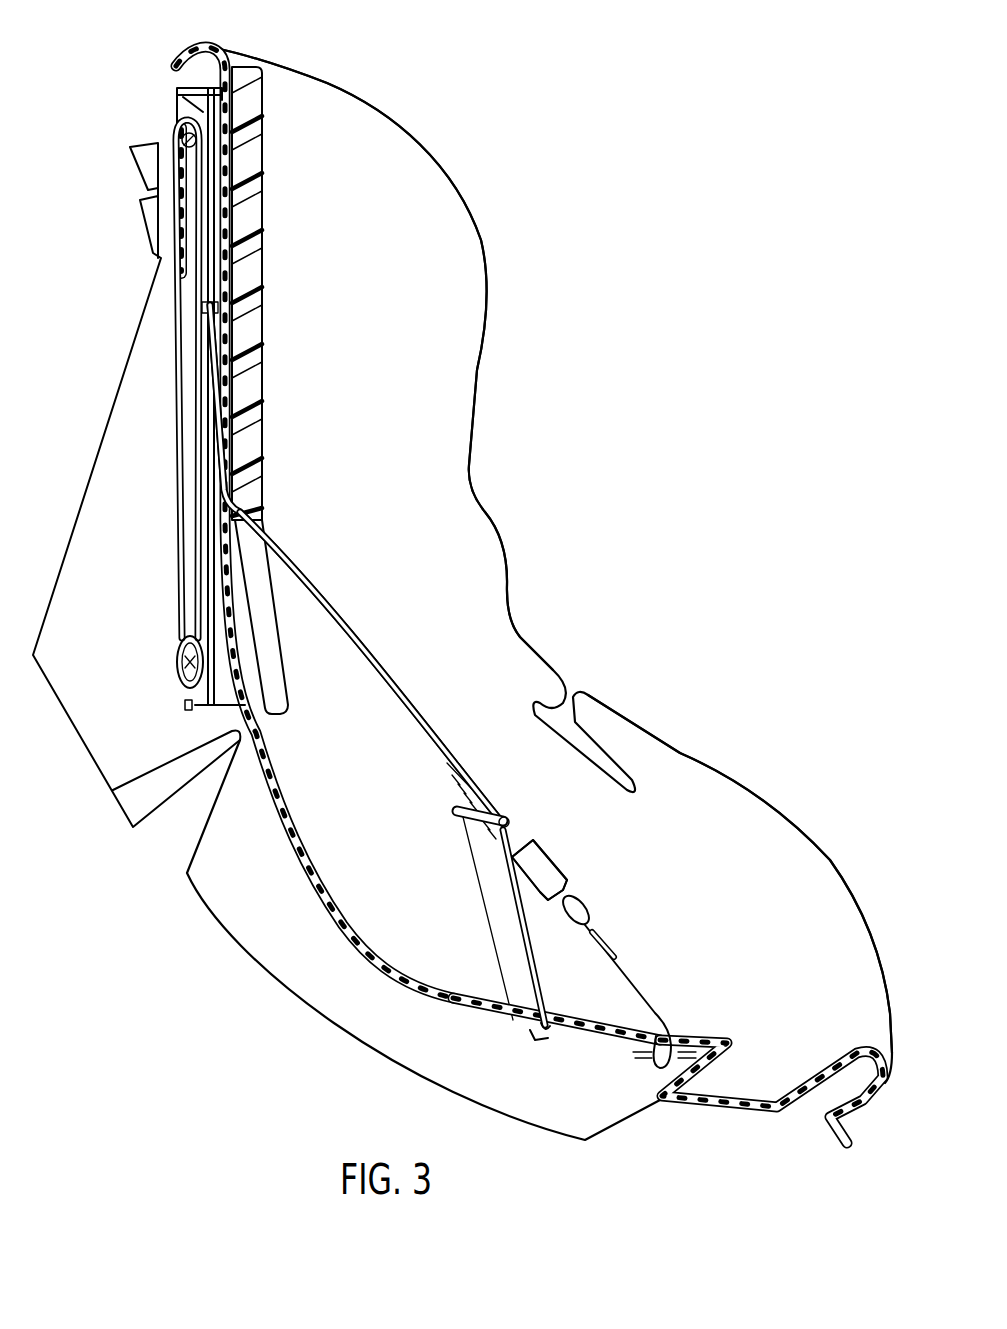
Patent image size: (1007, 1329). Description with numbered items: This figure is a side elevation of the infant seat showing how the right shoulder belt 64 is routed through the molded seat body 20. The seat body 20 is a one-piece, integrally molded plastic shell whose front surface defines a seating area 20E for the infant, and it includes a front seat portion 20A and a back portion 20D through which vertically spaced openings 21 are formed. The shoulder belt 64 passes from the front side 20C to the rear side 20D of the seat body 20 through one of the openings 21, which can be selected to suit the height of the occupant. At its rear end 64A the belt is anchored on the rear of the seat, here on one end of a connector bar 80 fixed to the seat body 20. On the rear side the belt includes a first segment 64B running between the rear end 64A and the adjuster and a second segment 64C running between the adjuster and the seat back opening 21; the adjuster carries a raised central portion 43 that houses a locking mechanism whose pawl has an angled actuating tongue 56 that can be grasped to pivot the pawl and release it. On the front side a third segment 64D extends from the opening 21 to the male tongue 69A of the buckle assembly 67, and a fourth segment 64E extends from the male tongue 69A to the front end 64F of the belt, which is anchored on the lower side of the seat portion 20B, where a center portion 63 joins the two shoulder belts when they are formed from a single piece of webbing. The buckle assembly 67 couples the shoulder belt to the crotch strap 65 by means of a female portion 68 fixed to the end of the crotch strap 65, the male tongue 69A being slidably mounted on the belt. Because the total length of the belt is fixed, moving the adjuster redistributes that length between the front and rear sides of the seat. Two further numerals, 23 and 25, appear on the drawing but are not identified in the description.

The seat body 20 is at (860, 888).
The front seat portion 20A is at (262, 274).
The seat portion 20B is at (697, 797).
The front side 20C is at (404, 371).
The back portion 20D is at (75, 460).
The seating area 20E is at (307, 840).
The openings 21 is at (252, 497).
The lower rail channel 23 is at (680, 1028).
The rail edge 25 is at (552, 1018).
The raised central portion 43 is at (148, 207).
The angled actuating tongue 56 is at (126, 147).
The center portion 63 is at (533, 1040).
The right shoulder belt 64 is at (412, 700).
The rear end 64A is at (173, 658).
The first segment 64B is at (170, 462).
The second segment 64C is at (207, 374).
The third segment 64D is at (348, 618).
The fourth segment 64E is at (500, 927).
The front end 64F is at (525, 1029).
The crotch strap 65 is at (643, 983).
The buckle assembly 67 is at (577, 863).
The female portion 68 is at (567, 884).
The male tongue 69A is at (448, 812).
The connector bar 80 is at (184, 708).